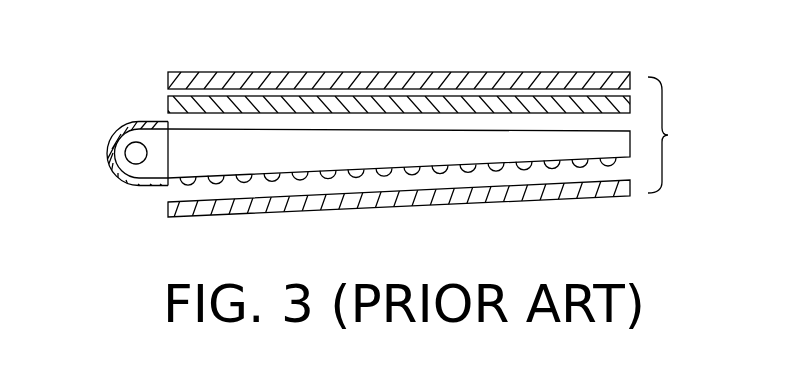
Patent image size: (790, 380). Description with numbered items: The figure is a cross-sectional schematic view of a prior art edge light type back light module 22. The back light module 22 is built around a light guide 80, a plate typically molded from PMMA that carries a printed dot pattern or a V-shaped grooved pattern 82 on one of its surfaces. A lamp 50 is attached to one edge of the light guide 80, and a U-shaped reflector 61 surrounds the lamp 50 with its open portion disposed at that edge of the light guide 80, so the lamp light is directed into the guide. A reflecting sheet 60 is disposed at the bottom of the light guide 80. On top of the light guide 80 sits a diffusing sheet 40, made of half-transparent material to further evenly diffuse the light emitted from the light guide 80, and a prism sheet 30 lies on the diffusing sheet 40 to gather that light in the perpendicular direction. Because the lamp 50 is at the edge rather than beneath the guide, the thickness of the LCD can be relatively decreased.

The back light module 22 is at (434, 135).
The prism sheet 30 is at (307, 72).
The diffusing sheet 40 is at (447, 96).
The lamp 50 is at (128, 151).
The reflecting sheet 60 is at (308, 210).
The U-shaped reflector 61 is at (141, 187).
The light guide 80 is at (487, 165).
The protrusion 82 is at (557, 162).